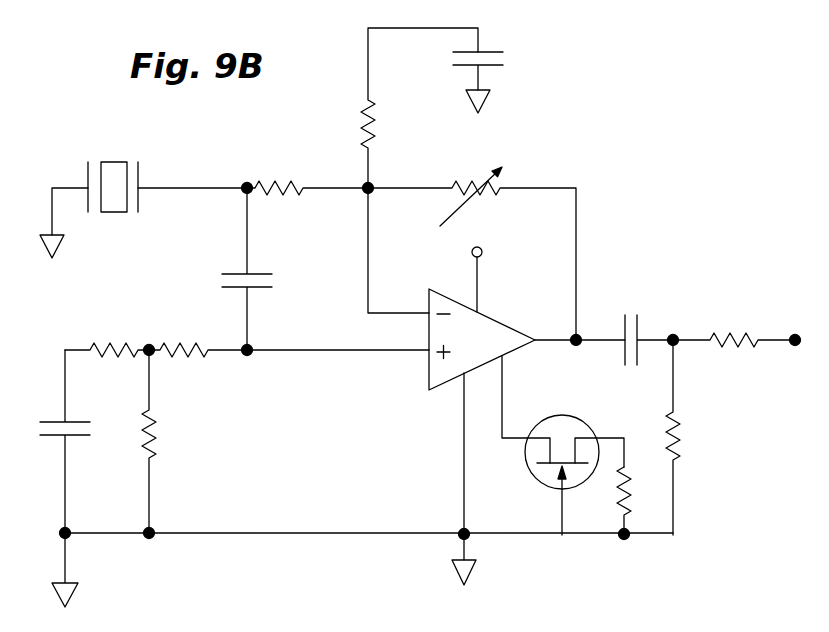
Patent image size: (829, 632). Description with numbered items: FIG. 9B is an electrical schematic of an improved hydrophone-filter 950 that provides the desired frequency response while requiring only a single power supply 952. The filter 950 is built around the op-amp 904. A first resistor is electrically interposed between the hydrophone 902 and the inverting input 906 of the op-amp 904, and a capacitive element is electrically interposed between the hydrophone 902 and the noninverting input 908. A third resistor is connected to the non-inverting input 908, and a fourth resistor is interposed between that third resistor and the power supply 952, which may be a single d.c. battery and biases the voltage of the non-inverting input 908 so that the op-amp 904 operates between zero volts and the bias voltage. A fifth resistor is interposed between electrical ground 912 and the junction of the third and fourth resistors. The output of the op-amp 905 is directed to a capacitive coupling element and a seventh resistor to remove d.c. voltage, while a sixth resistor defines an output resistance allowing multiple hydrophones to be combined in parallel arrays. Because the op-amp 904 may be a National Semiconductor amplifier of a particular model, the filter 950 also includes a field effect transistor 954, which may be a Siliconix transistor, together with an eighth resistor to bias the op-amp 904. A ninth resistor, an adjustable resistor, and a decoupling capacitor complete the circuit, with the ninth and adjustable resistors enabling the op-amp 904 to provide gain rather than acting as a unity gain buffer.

The hydrophone 902 is at (155, 180).
The op-amp 904 is at (482, 316).
The output of the op-amp 905 is at (576, 346).
The inverting input 906 is at (384, 313).
The noninverting input 908 is at (405, 351).
The electrical ground 912 is at (71, 598).
The hydrophone-filter 950 is at (406, 323).
The power supply 952 is at (62, 437).
The field effect transistor 954 is at (578, 417).